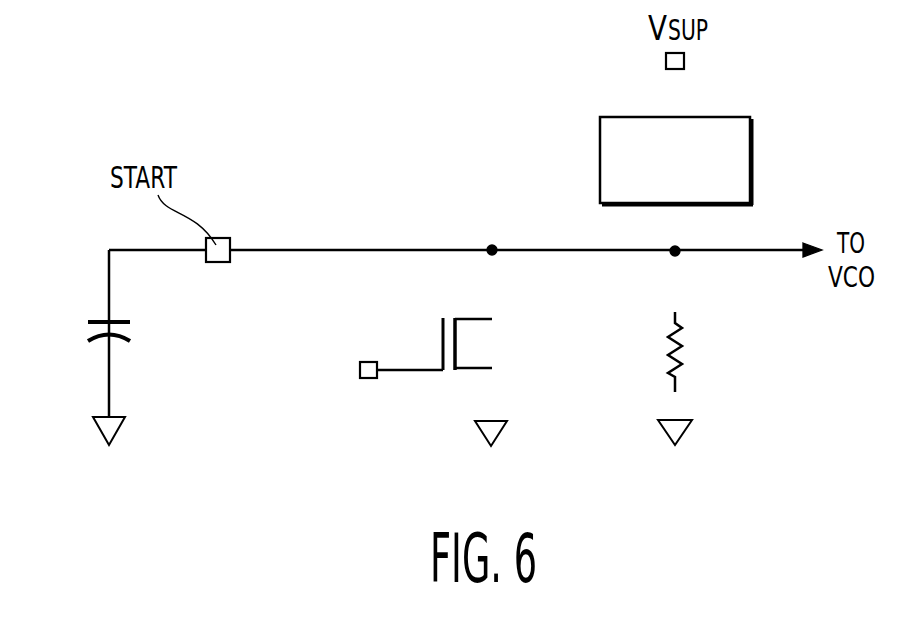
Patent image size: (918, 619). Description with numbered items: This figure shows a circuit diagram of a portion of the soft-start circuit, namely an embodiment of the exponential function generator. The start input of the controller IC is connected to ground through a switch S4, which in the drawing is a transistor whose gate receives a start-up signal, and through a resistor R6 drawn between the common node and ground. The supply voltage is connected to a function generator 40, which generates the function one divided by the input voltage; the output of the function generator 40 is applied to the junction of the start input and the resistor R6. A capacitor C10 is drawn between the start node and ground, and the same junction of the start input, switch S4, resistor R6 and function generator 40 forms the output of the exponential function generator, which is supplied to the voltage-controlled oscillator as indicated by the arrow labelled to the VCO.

The function generator 40 is at (750, 160).
The switch S4 is at (458, 341).
The resistor R6 is at (690, 378).
The capacitor C10 is at (84, 331).